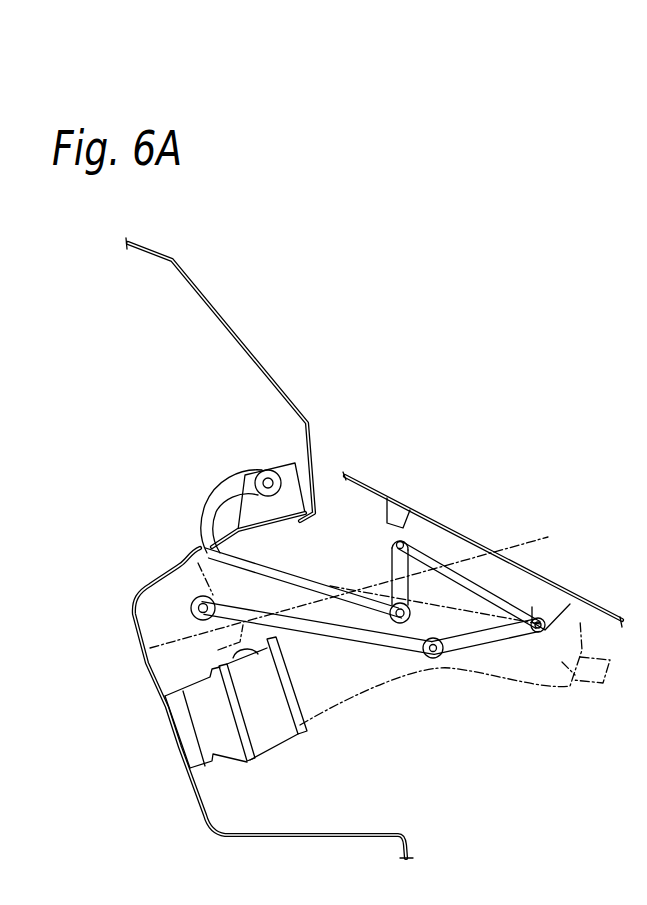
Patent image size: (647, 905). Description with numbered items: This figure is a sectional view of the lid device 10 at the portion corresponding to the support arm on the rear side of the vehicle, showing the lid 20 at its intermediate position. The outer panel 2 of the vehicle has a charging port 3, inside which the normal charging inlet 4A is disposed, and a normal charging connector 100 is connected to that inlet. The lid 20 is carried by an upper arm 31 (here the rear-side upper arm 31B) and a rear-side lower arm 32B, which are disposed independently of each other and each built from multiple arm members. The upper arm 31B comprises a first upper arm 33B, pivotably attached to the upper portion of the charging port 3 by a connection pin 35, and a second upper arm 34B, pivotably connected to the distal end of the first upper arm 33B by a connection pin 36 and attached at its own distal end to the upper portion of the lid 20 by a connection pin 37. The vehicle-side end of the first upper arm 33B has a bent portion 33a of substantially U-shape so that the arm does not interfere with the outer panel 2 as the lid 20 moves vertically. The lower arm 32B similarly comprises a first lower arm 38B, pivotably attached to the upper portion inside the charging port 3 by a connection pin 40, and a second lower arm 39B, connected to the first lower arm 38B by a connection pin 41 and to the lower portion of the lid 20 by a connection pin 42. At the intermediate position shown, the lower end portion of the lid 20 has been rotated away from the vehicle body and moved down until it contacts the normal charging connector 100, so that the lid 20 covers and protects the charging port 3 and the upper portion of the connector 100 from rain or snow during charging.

The outer panel 2 is at (143, 242).
The charging port 3 is at (352, 836).
The normal charging inlet 4A is at (268, 745).
The seat device 10 is at (505, 402).
The lid 20 is at (367, 473).
The upper arm 31 is at (637, 453).
The upper arm 31B is at (145, 448).
The lower arm 32B is at (565, 723).
The bent portion 33a is at (200, 466).
The first upper arm 33B is at (228, 528).
The second upper arm 34B is at (250, 498).
The connection pin 35 is at (257, 471).
The connection pin 36 is at (443, 637).
The connection pin 37 is at (407, 534).
The first lower arm 38B is at (357, 650).
The second lower arm 39B is at (480, 635).
The connection pin 40 is at (197, 601).
The connection pin 41 is at (522, 607).
The connection pin 42 is at (573, 604).
The normal charging connector 100 is at (577, 677).